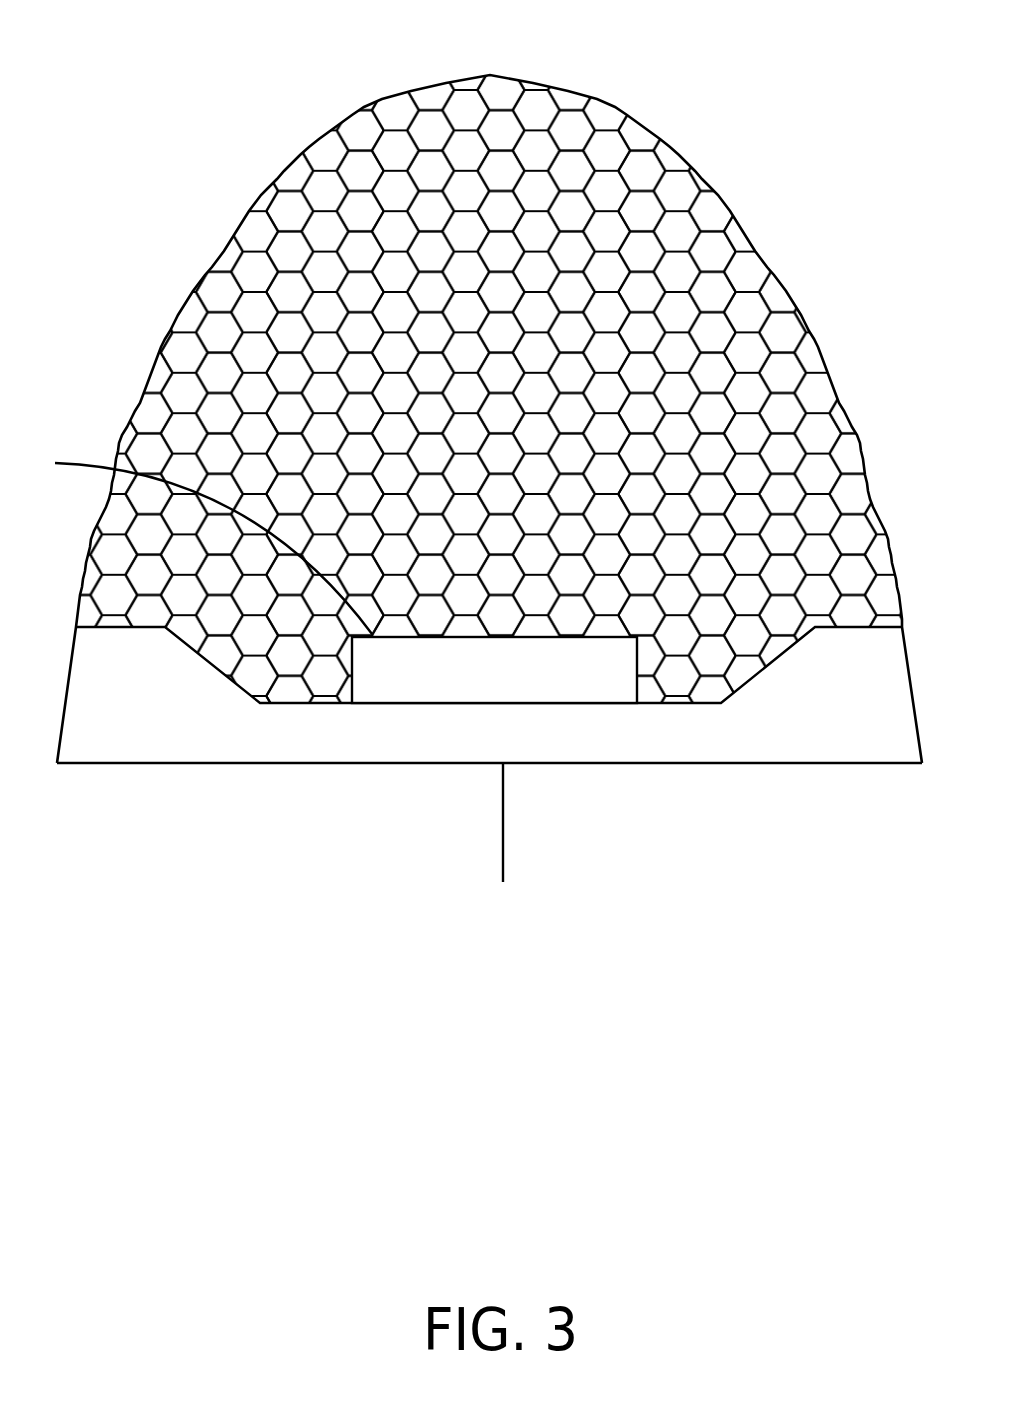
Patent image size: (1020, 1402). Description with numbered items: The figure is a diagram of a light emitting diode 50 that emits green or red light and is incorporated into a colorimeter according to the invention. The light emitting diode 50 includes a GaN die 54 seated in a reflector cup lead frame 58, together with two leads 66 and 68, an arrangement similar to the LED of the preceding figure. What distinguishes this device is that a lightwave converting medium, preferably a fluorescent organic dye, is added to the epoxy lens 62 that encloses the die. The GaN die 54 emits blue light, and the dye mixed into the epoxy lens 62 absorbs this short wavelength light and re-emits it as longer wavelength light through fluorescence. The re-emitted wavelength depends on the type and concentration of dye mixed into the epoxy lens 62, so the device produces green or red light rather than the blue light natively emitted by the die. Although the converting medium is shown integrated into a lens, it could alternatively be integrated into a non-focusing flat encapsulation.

The light emitting diode 50 is at (755, 37).
The GaN die 54 is at (514, 691).
The reflector cup lead frame 58 is at (805, 764).
The epoxy lens 62 is at (798, 307).
The lead 66 is at (503, 852).
The lead 68 is at (90, 463).